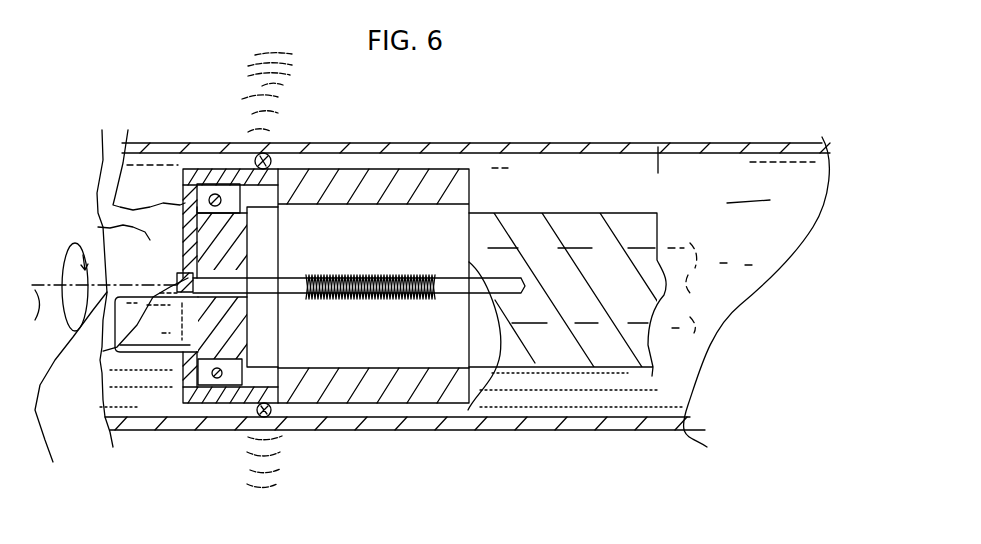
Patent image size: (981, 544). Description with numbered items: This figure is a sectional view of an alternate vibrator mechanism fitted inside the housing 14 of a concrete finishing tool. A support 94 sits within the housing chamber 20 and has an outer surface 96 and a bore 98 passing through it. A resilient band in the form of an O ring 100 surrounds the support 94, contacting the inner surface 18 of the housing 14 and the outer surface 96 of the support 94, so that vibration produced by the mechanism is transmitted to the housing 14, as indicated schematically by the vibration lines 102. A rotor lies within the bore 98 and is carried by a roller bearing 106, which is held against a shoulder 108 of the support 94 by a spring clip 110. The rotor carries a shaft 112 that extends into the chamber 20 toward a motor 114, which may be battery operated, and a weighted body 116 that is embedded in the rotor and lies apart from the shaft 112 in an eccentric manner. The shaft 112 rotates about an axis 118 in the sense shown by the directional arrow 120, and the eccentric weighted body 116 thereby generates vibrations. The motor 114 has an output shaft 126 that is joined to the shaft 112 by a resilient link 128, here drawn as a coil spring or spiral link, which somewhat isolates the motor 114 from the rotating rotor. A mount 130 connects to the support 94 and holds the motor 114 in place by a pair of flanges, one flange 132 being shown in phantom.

The housing 14 is at (463, 147).
The inner surface 18 is at (658, 147).
The housing chamber 20 is at (748, 190).
The support 94 is at (203, 167).
The outer surface 96 is at (255, 410).
The bore 98 is at (135, 273).
The O ring 100 is at (224, 197).
The vibration lines 102 is at (296, 460).
The roller bearing 106 is at (210, 372).
The shoulder 108 is at (268, 183).
The spring clip 110 is at (183, 183).
The shaft 112 is at (150, 240).
The motor 114 is at (647, 307).
The weighted body 116 is at (98, 218).
The axis 118 is at (55, 301).
The directional arrow 120 is at (71, 393).
The output shaft 126 is at (468, 410).
The resilient link 128 is at (377, 278).
The mount 130 is at (425, 403).
The flange 132 is at (787, 270).